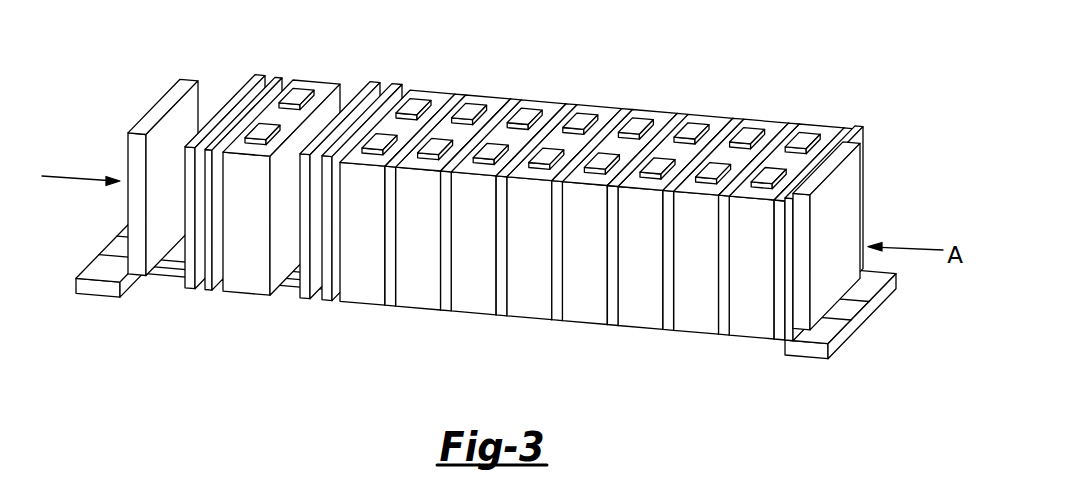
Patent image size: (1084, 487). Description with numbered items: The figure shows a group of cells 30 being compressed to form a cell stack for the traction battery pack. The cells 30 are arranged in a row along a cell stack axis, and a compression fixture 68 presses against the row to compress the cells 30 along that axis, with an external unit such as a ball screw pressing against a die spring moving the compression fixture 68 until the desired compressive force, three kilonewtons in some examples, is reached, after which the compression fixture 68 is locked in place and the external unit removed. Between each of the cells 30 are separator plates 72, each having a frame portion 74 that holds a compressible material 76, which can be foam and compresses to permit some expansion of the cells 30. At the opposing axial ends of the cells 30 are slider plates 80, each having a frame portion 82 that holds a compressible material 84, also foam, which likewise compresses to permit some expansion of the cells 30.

The cells 30 is at (792, 163).
The compression fixture 68 is at (847, 190).
The separator plates 72 is at (355, 113).
The frame portion 74 is at (345, 107).
The compressible material 76 is at (330, 243).
The slider plates 80 is at (228, 110).
The frame portion 82 is at (213, 120).
The compressible material 84 is at (213, 230).